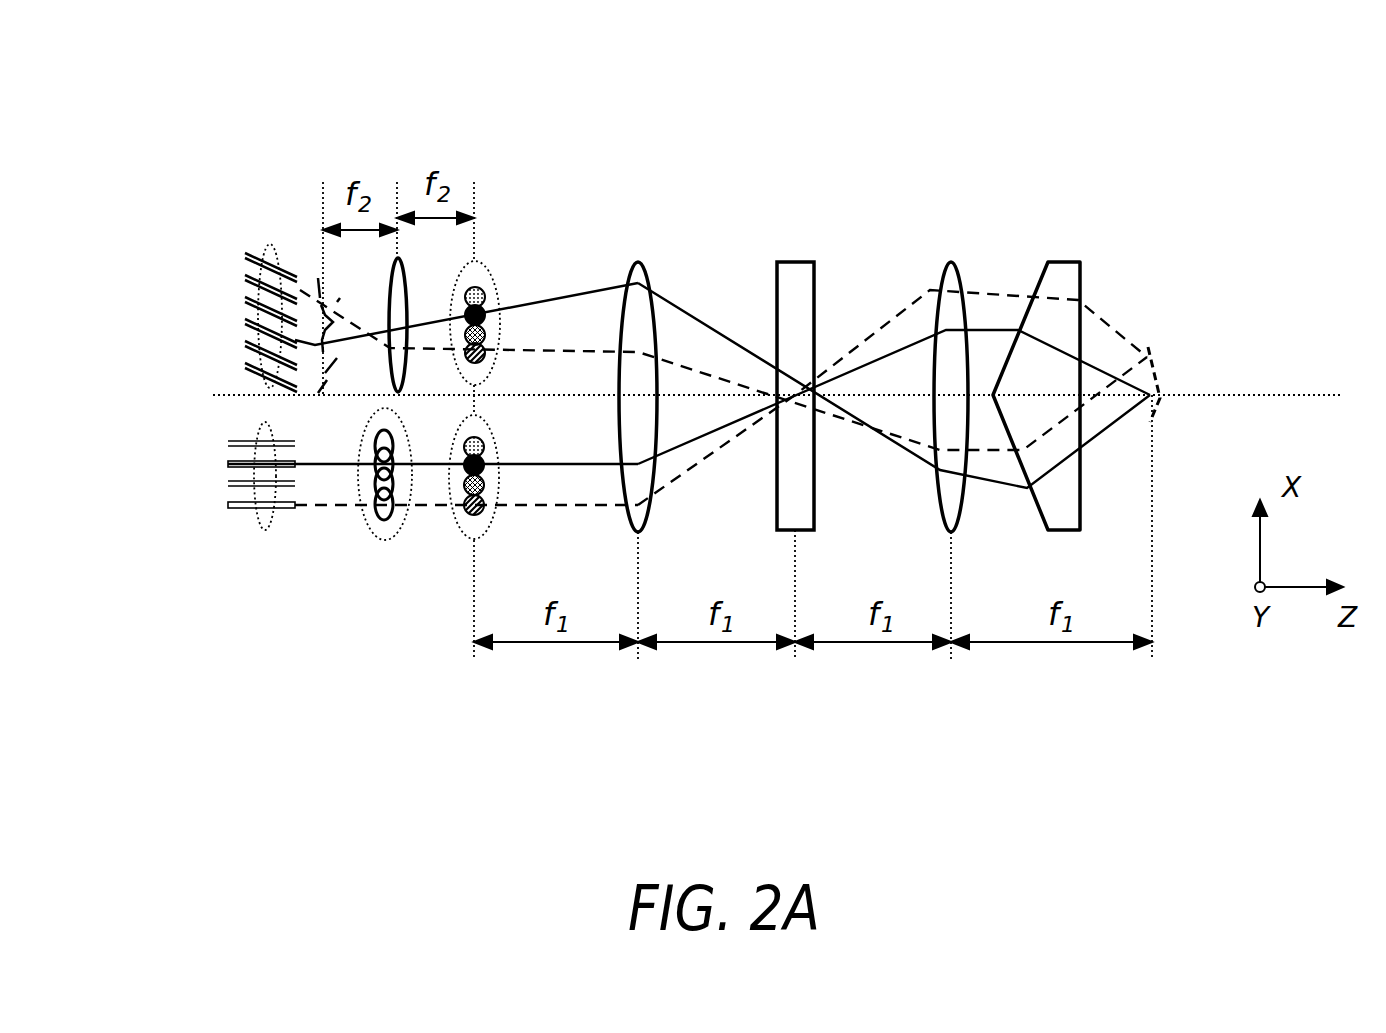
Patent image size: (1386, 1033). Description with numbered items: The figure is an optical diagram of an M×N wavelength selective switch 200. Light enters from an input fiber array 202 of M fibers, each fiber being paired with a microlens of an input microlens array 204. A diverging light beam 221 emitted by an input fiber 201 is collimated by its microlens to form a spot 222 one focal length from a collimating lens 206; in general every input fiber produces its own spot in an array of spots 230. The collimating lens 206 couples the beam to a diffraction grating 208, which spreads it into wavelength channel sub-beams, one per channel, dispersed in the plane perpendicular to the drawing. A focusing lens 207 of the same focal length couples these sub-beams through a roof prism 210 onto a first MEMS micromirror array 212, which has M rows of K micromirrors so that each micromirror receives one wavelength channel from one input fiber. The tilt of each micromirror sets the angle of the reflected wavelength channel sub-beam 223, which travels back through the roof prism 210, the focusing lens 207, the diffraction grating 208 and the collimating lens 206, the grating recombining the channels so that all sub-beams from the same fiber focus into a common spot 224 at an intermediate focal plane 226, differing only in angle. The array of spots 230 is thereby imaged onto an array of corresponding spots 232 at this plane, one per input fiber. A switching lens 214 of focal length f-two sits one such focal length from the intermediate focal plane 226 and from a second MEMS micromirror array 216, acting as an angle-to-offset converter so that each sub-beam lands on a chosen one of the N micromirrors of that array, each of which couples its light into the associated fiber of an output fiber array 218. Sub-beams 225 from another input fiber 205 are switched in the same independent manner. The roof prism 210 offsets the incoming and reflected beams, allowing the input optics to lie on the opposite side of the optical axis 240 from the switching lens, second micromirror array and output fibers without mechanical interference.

The wavelength selective switch 200 is at (1012, 70).
The input fiber 201 is at (210, 464).
The input fiber 205 is at (222, 505).
The input fiber array 202 is at (255, 532).
The input microlens array 204 is at (385, 542).
The array of spots 230 is at (460, 532).
The spot 222 is at (455, 464).
The intermediate focal plane 226 is at (474, 240).
The array of corresponding spots 232 is at (495, 295).
The output fiber array 218 is at (260, 240).
The second MEMS micromirror array 216 is at (312, 266).
The switching lens 214 is at (387, 370).
The collimating lens 206 is at (636, 262).
The diffraction grating 208 is at (800, 262).
The focusing lens 207 is at (948, 263).
The roof prism 210 is at (1062, 262).
The first MEMS micromirror array 212 is at (1172, 325).
The optical axis 240 is at (1210, 395).
The spot 224 is at (490, 312).
The diverging light beam 221 is at (587, 464).
The wavelength channel sub-beams 225 is at (598, 506).
The reflected wavelength channel sub-beam 223 is at (1117, 438).